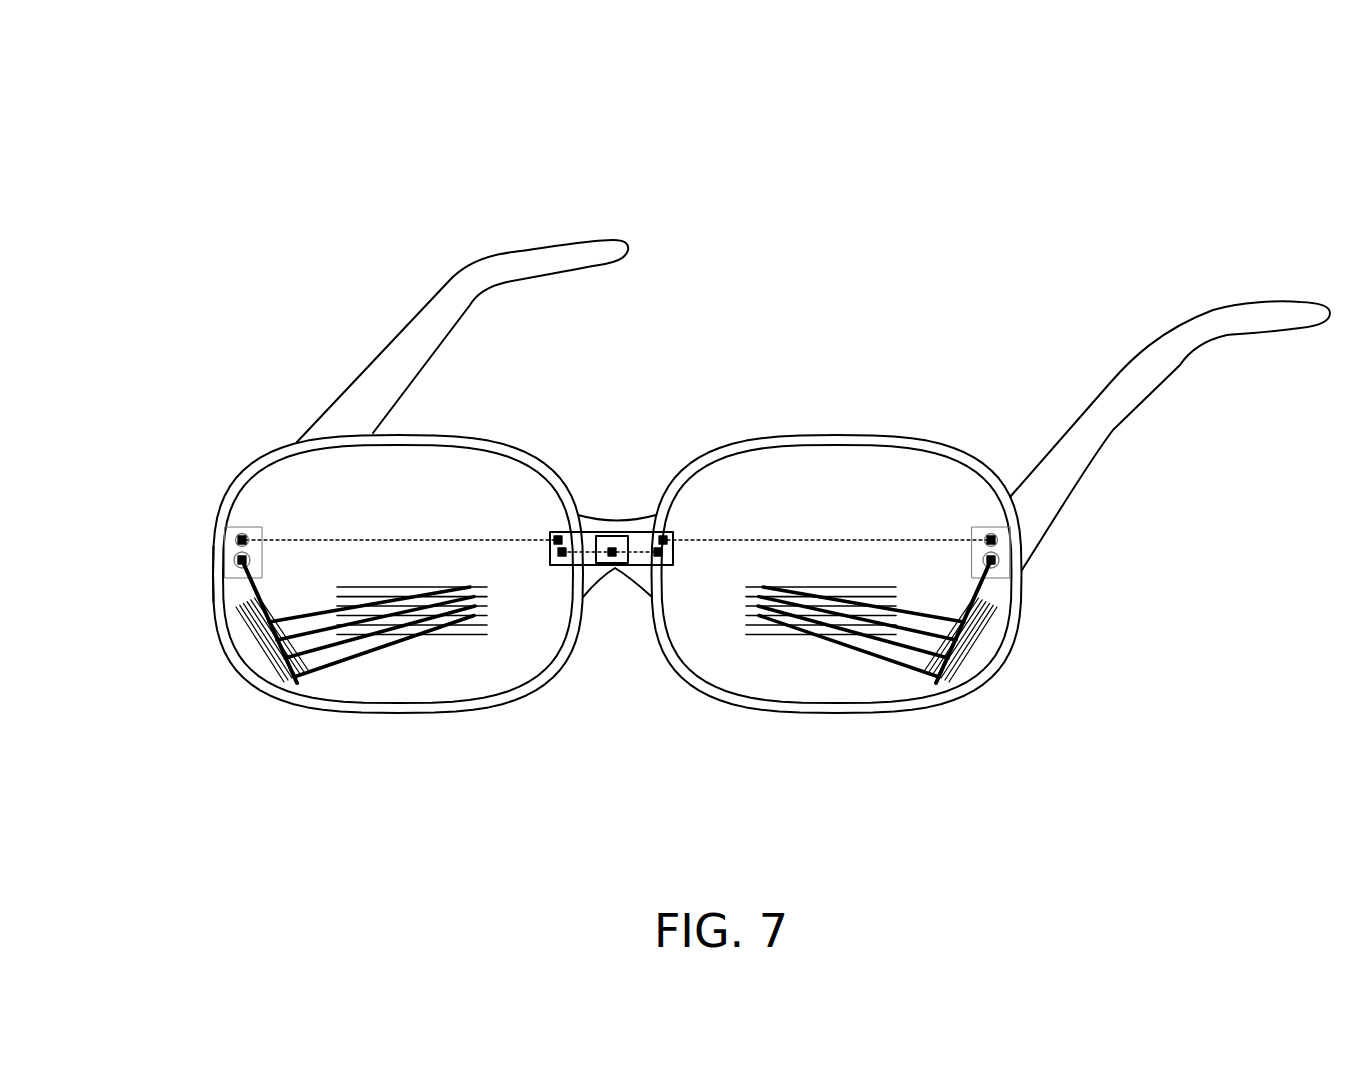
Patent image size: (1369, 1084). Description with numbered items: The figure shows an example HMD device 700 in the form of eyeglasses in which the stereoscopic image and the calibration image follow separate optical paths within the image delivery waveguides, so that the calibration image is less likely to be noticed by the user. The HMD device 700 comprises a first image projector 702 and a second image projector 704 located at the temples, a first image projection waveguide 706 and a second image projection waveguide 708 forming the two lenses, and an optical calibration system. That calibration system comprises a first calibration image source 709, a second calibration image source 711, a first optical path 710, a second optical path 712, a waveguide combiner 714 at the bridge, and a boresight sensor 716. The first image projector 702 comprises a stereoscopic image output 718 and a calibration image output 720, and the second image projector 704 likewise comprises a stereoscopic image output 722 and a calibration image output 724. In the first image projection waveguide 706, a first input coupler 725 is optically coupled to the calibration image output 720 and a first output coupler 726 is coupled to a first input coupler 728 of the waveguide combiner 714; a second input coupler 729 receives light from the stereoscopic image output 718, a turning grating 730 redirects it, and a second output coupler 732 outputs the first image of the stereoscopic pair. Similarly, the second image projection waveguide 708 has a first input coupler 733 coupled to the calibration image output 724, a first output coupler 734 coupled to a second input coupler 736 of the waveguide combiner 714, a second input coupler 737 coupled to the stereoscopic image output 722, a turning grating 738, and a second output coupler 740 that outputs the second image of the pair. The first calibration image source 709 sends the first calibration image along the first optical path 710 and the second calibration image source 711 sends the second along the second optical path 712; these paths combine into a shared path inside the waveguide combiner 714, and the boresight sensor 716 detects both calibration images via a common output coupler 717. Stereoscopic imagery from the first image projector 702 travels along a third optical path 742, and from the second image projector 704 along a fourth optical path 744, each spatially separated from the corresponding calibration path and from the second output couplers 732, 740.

The HMD device 700 is at (170, 78).
The first image projector 702 is at (1027, 522).
The second image projector 704 is at (220, 527).
The first image projection waveguide 706 is at (771, 474).
The second image projection waveguide 708 is at (313, 477).
The first calibration image source 709 is at (1011, 544).
The first optical path 710 is at (790, 538).
The second calibration image source 711 is at (201, 530).
The second optical path 712 is at (384, 538).
The waveguide combiner 714 is at (603, 532).
The boresight sensor 716 is at (627, 536).
The common output coupler 717 is at (616, 579).
The stereoscopic image output 718 is at (1000, 564).
The calibration image output 720 is at (992, 528).
The stereoscopic image output 722 is at (234, 560).
The calibration image output 724 is at (237, 527).
The first input coupler 725 is at (969, 534).
The first output coupler 726 is at (680, 521).
The first input coupler 728 is at (665, 574).
The second input coupler 729 is at (968, 560).
The turning grating 730 is at (977, 633).
The second output coupler 732 is at (780, 628).
The first input coupler 733 is at (257, 527).
The first output coupler 734 is at (542, 531).
The second input coupler 736 is at (568, 576).
The second input coupler 737 is at (266, 557).
The turning grating 738 is at (262, 645).
The second output coupler 740 is at (447, 632).
The third optical path 742 is at (880, 660).
The fourth optical path 744 is at (375, 655).